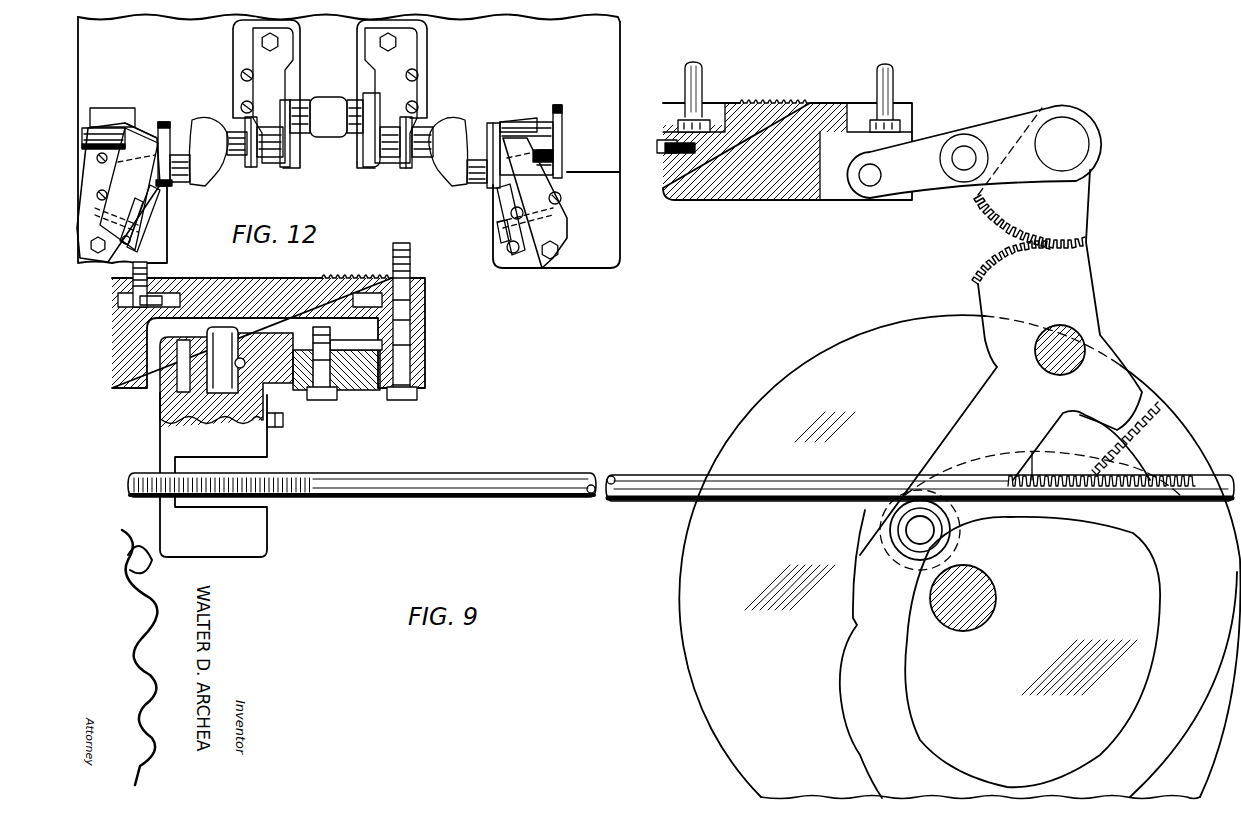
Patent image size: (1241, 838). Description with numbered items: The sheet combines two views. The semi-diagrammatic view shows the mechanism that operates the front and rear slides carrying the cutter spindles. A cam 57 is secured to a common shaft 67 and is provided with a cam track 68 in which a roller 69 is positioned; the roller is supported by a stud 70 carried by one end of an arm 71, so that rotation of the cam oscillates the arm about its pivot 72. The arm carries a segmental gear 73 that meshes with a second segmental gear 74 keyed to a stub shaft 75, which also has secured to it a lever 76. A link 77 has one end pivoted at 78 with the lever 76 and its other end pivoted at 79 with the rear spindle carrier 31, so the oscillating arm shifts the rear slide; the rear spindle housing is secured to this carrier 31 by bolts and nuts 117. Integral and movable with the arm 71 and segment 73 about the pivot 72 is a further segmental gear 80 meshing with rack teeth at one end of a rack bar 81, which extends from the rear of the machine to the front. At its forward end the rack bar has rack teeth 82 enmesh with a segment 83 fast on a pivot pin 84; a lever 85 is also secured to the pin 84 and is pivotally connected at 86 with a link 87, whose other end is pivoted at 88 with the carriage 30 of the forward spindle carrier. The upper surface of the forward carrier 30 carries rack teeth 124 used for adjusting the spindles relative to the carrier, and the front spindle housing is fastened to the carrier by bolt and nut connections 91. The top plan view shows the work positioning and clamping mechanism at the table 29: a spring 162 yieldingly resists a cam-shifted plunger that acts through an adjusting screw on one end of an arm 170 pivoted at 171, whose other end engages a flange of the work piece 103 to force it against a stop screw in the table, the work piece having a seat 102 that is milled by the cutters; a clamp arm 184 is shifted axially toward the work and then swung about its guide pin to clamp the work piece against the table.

In FIG. 12, the table 29 is at (582, 62).
In FIG. 12, the clamp arm 184 is at (138, 122).
In FIG. 12, the seat 102 is at (180, 105).
In FIG. 12, the spring 162 is at (258, 165).
In FIG. 12, the work piece 103 is at (325, 125).
In FIG. 12, the arm 170 is at (168, 192).
In FIG. 12, the pivot 171 is at (158, 227).
In FIG. 9, the forward spindle carrier 30 is at (125, 372).
In FIG. 9, the rack teeth 124 is at (338, 276).
In FIG. 9, the bolt and nut connections 91 is at (150, 280).
In FIG. 9, the pivot 88 is at (425, 345).
In FIG. 9, the pivot pin 84 is at (208, 422).
In FIG. 9, the lever 85 is at (270, 385).
In FIG. 9, the pivotal connection 86 is at (337, 356).
In FIG. 9, the link 87 is at (368, 375).
In FIG. 9, the rack teeth 82 is at (283, 473).
In FIG. 9, the segment 83 is at (255, 470).
In FIG. 9, the rack bar 81 is at (660, 477).
In FIG. 9, the rear spindle carrier 31 is at (775, 197).
In FIG. 9, the bolts and nuts 117 is at (686, 95).
In FIG. 9, the link 77 is at (933, 183).
In FIG. 9, the pivot 79 is at (872, 180).
In FIG. 9, the pivot 78 is at (965, 157).
In FIG. 9, the stub shaft 75 is at (1068, 150).
In FIG. 9, the lever 76 is at (1048, 105).
In FIG. 9, the second segmental gear 74 is at (1103, 203).
In FIG. 9, the cam 57 is at (772, 448).
In FIG. 9, the cam track 68 is at (1162, 573).
In FIG. 9, the common shaft 67 is at (993, 605).
In FIG. 9, the stud 70 is at (957, 542).
In FIG. 9, the roller 69 is at (900, 557).
In FIG. 9, the arm 71 is at (963, 423).
In FIG. 9, the segmental gear 73 is at (985, 265).
In FIG. 9, the pivot 72 is at (1070, 333).
In FIG. 9, the segmental gear 80 is at (1143, 435).